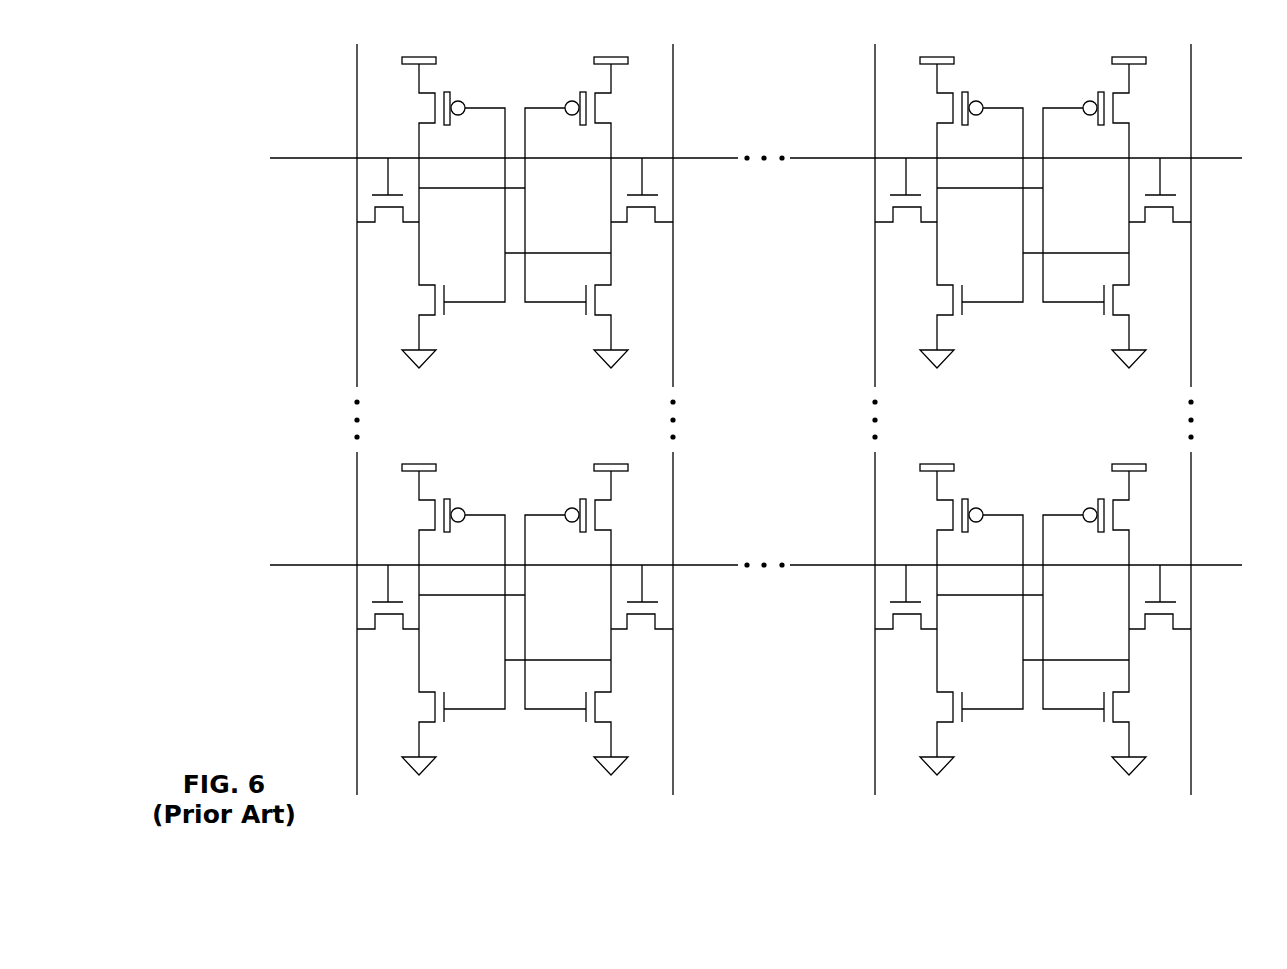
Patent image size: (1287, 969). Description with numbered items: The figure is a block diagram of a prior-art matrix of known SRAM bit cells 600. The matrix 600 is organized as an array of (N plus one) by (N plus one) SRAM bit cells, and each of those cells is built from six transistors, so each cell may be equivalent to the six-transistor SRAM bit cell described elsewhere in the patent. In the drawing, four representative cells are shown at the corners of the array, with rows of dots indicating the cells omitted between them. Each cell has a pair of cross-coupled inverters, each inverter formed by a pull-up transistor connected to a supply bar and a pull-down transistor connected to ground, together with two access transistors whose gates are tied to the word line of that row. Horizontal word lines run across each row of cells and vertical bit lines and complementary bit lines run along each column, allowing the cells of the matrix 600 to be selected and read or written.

The matrix of SRAM bit cells 600 is at (255, 70).